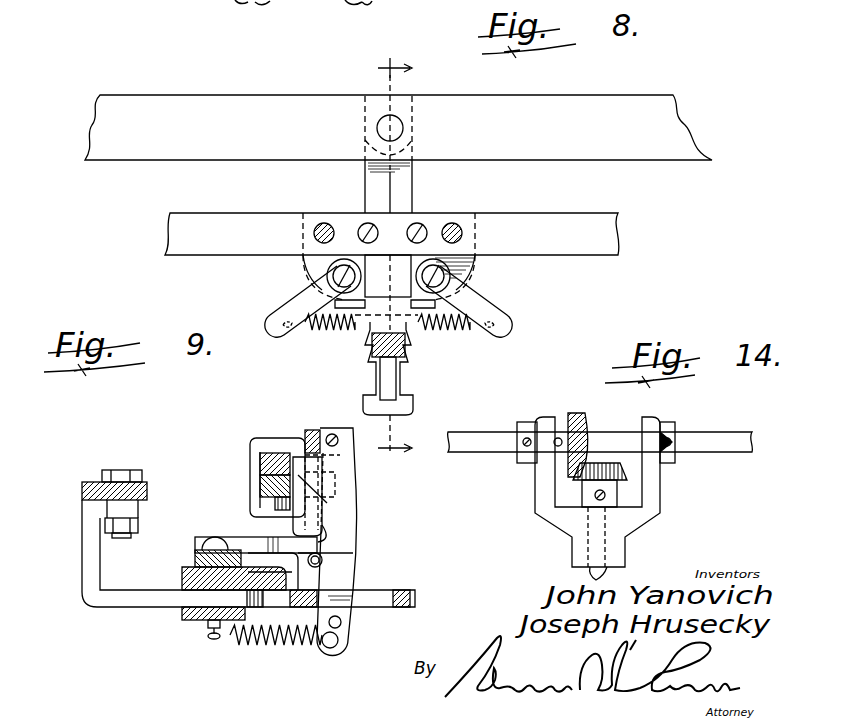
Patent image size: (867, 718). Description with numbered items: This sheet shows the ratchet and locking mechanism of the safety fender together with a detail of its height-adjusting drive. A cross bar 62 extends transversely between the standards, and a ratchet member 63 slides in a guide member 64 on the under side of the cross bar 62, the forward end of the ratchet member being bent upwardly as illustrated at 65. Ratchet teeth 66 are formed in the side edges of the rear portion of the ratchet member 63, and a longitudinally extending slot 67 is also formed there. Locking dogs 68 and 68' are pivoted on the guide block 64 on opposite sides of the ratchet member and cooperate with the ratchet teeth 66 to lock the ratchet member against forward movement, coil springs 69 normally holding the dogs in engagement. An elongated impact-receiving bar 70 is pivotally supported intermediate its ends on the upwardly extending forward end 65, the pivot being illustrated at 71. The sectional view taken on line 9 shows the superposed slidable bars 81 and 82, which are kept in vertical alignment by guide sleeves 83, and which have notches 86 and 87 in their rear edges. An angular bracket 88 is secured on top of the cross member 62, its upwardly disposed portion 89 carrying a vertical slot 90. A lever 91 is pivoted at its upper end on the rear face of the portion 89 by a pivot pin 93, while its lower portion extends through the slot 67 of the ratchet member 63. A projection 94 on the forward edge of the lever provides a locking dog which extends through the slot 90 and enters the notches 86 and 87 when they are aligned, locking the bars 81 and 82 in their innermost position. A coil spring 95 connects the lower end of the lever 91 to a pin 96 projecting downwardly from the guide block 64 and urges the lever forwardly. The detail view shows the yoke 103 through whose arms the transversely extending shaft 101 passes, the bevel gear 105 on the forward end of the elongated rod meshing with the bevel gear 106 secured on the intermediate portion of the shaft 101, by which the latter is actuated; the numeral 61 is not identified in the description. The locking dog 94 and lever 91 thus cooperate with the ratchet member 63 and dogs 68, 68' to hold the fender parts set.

In FIG. 8, the section line of FIG. 9 is at (395, 247).
In FIG. 9, the section line of FIG. 9 is at (395, 461).
In FIG. 9, the electromagnet armature 61 is at (190, 562).
In FIG. 8, the cross bar 62 is at (577, 240).
In FIG. 8, the ratchet member 63 is at (404, 190).
In FIG. 9, the ratchet member 63 is at (158, 598).
In FIG. 8, the guide member 64 is at (470, 268).
In FIG. 9, the guide member 64 is at (200, 620).
In FIG. 9, the upwardly bent forward end 65 is at (92, 553).
In FIG. 8, the ratchet teeth 66 is at (375, 377).
In FIG. 8, the longitudinally extending slot 67 is at (405, 380).
In FIG. 9, the longitudinally extending slot 67 is at (379, 600).
In FIG. 8, the locking dog 68 is at (303, 298).
In FIG. 9, the locking dog 68 is at (357, 542).
In FIG. 8, the locking dog 68' is at (464, 320).
In FIG. 8, the coil springs 69 is at (318, 330).
In FIG. 8, the elongated bar 70 is at (645, 145).
In FIG. 9, the elongated bar 70 is at (86, 482).
In FIG. 8, the pivot 71 is at (392, 128).
In FIG. 9, the pivot 71 is at (126, 472).
In FIG. 9, the slidable bar 81 is at (262, 500).
In FIG. 9, the slidable bar 82 is at (262, 462).
In FIG. 9, the guide sleeves 83 is at (255, 444).
In FIG. 9, the notch 86 is at (262, 488).
In FIG. 9, the notch 87 is at (296, 460).
In FIG. 9, the angular bracket 88 is at (340, 553).
In FIG. 9, the upwardly disposed portion 89 is at (312, 430).
In FIG. 9, the vertical slot 90 is at (338, 455).
In FIG. 9, the lever 91 is at (356, 530).
In FIG. 9, the pivot pin 93 is at (338, 440).
In FIG. 9, the projection 94 is at (321, 502).
In FIG. 9, the coil spring 95 is at (276, 645).
In FIG. 9, the pin 96 is at (212, 645).
In FIG. 14, the transversely extending shaft 101 is at (727, 440).
In FIG. 14, the yoke 103 is at (637, 517).
In FIG. 14, the bevel gear 105 is at (603, 465).
In FIG. 14, the bevel gear 106 is at (578, 412).